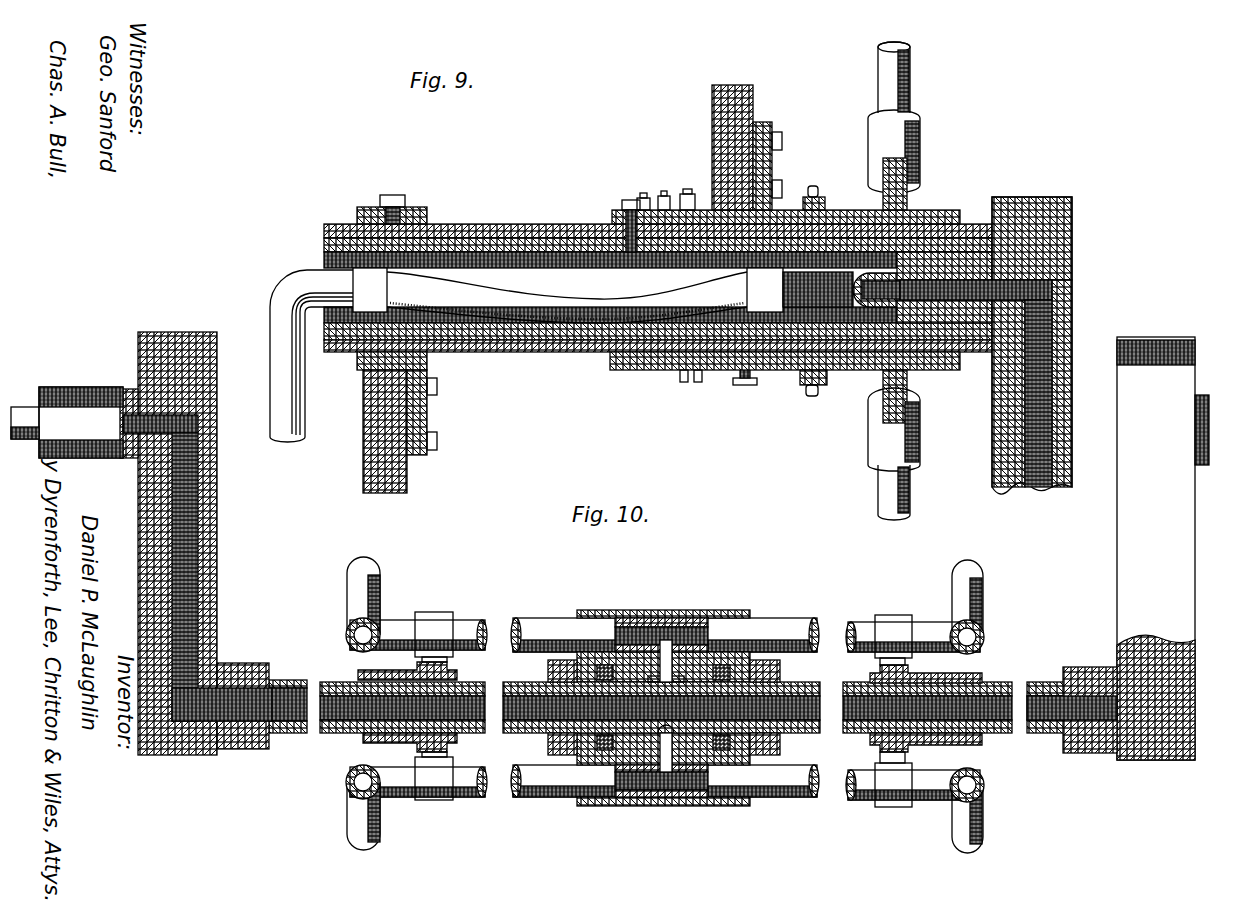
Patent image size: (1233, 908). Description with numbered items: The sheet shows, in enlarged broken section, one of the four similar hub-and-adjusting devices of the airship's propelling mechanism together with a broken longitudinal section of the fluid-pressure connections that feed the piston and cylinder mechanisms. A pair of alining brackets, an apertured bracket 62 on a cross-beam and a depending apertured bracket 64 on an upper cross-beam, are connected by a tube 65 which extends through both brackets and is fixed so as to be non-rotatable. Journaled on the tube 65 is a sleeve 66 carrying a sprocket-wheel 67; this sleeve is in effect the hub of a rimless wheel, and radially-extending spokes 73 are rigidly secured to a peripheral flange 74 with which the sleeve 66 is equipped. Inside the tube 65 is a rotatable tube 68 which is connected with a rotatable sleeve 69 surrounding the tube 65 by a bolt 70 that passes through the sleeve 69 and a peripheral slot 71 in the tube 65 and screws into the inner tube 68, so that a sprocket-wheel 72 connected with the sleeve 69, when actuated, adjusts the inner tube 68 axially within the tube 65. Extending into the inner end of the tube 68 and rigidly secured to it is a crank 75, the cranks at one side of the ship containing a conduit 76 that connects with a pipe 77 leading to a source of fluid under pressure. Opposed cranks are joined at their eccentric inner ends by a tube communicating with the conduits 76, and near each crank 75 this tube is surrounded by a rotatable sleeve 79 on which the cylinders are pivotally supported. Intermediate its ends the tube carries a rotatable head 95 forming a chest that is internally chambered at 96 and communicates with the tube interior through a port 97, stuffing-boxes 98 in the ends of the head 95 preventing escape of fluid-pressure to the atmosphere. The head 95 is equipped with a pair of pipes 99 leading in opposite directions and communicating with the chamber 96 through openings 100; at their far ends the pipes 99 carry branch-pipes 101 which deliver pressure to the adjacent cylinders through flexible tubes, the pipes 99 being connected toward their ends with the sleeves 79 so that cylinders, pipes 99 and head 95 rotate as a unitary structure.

In FIG. 9, the apertured bracket 62 is at (428, 212).
In FIG. 9, the depending apertured bracket 64 is at (775, 192).
In FIG. 9, the tube 65 is at (850, 212).
In FIG. 9, the sleeve 66 is at (868, 172).
In FIG. 9, the sprocket-wheel 67 is at (818, 190).
In FIG. 9, the rotatable tube 68 is at (925, 245).
In FIG. 9, the rotatable sleeve 69 is at (663, 194).
In FIG. 9, the bolt 70 is at (625, 202).
In FIG. 9, the peripheral slot 71 is at (598, 226).
In FIG. 9, the sprocket-wheel 72 is at (644, 195).
In FIG. 9, the spoke 73 is at (912, 95).
In FIG. 9, the peripheral flange 74 is at (908, 170).
In FIG. 9, the crank 75 is at (1073, 300).
In FIG. 10, the crank 75 is at (218, 522).
In FIG. 9, the conduit 76 is at (1045, 368).
In FIG. 10, the conduit 76 is at (185, 615).
In FIG. 9, the pipe 77 is at (300, 428).
In FIG. 10, the rotatable sleeve 79 is at (458, 745).
In FIG. 10, the rotatable head 95 is at (605, 795).
In FIG. 10, the chamber 96 is at (695, 800).
In FIG. 10, the port 97 is at (664, 745).
In FIG. 10, the stuffing-box 98 is at (548, 738).
In FIG. 10, the pipe 99 is at (462, 618).
In FIG. 10, the opening 100 is at (666, 640).
In FIG. 10, the branch-pipe 101 is at (372, 598).